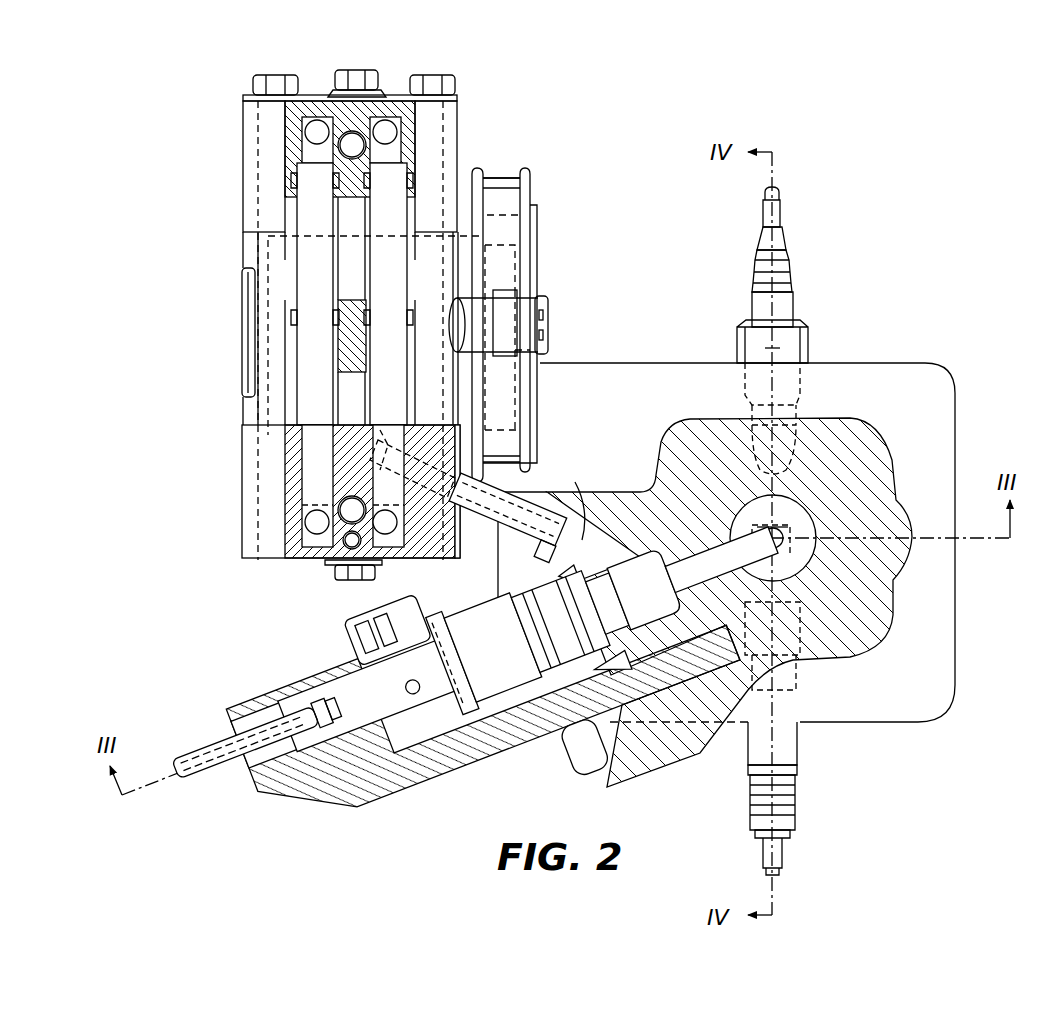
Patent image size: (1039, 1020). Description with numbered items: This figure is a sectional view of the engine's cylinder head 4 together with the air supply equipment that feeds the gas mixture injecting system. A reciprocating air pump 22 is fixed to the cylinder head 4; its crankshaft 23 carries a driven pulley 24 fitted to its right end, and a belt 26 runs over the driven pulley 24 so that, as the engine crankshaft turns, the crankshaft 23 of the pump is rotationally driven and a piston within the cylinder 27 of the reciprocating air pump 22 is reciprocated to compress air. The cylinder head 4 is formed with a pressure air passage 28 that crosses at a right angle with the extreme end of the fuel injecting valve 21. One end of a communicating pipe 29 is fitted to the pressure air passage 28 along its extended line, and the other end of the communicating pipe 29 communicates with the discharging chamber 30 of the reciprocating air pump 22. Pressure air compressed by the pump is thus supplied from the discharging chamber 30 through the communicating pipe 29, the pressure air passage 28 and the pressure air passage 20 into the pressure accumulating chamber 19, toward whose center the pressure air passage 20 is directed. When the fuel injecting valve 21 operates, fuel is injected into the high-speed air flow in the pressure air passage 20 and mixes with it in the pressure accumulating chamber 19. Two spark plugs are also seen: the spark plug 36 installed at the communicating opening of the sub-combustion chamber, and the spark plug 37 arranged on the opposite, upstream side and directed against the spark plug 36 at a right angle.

The cylinder head 4 is at (937, 378).
The pressure accumulating chamber 19 is at (773, 538).
The pressure air passage 20 is at (693, 540).
The fuel injecting valve 21 is at (490, 647).
The reciprocating air pump 22 is at (233, 319).
The crankshaft 23 is at (543, 325).
The driven pulley 24 is at (530, 178).
The belt 26 is at (498, 174).
The cylinder 27 is at (257, 252).
The pressure air passage 28 is at (583, 535).
The communicating pipe 29 is at (535, 490).
The discharging chamber 30 is at (384, 425).
The spark plug 36 is at (792, 310).
The spark plug 37 is at (795, 750).